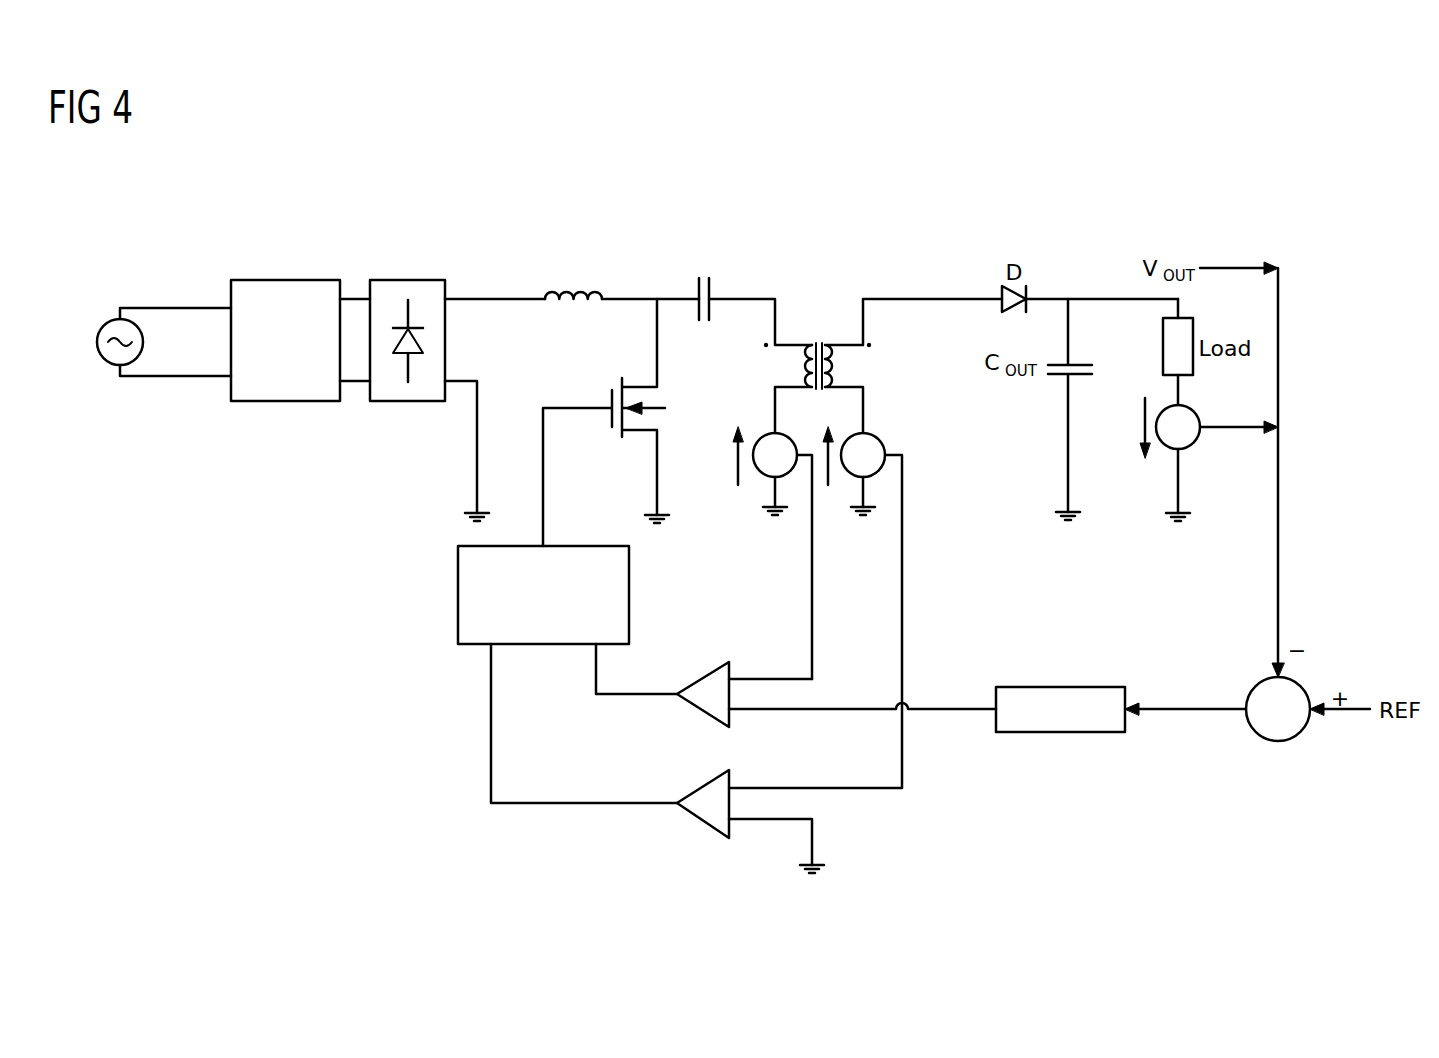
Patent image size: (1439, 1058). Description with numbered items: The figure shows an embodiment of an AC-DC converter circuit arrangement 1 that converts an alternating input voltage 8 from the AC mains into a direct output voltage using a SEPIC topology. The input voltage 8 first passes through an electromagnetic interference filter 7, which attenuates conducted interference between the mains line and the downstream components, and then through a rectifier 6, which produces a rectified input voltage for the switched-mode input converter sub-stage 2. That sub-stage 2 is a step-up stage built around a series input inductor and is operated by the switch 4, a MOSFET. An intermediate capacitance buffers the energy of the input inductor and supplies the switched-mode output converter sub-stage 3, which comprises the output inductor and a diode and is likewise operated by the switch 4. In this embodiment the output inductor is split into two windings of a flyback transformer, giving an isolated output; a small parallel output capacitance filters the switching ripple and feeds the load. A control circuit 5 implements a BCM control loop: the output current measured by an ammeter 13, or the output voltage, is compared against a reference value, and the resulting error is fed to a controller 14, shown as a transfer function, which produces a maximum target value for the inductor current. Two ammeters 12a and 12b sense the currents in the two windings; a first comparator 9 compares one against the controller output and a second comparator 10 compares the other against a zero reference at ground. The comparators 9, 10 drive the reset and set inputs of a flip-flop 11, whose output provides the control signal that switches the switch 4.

The AC-DC converter circuit arrangement 1 is at (812, 188).
The switched-mode input converter sub-stage 2 is at (573, 240).
The switched-mode output converter sub-stage 3 is at (940, 258).
The switch 4 is at (602, 397).
The control circuit 5 is at (761, 733).
The rectifier 6 is at (409, 401).
The electromagnetic interference filter 7 is at (287, 401).
The alternating input voltage 8 is at (97, 342).
The first comparator 9 is at (700, 715).
The second comparator 10 is at (700, 822).
The flip-flop 11 is at (458, 594).
The ammeter 12a is at (762, 472).
The ammeter 12b is at (882, 441).
The ammeter 13 is at (1193, 446).
The controller 14 is at (1060, 732).